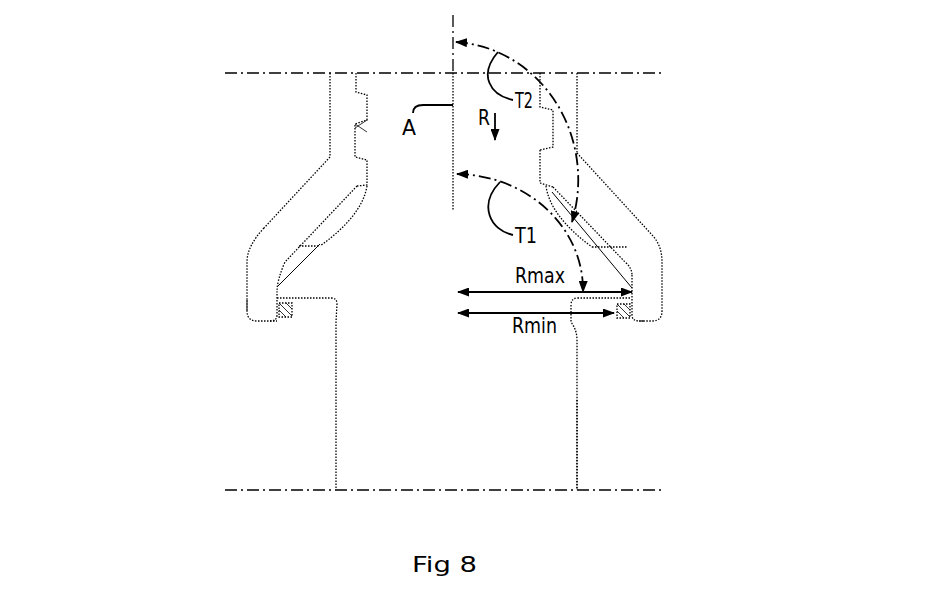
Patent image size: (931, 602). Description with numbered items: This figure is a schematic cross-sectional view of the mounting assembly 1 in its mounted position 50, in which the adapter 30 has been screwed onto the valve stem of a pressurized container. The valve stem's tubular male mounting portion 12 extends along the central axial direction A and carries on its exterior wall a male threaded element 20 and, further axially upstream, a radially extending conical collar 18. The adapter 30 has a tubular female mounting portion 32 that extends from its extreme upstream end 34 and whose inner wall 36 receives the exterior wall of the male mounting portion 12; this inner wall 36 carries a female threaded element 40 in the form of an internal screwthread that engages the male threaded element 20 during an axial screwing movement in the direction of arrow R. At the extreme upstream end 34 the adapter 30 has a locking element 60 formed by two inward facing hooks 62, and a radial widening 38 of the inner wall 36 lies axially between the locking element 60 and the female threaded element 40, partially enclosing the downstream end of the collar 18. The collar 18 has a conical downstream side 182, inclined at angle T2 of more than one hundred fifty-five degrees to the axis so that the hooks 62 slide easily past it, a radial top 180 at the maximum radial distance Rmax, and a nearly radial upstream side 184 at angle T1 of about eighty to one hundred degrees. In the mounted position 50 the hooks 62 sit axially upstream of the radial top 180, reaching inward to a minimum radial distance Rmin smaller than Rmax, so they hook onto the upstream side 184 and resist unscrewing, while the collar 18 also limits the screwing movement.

The mounting assembly 1 is at (738, 212).
The male mounting portion 12 is at (610, 378).
The radial collar 18 is at (602, 257).
The male threaded element 20 is at (548, 128).
The adapter 30 is at (246, 168).
The female mounting portion 32 is at (300, 132).
The extreme upstream end 34 is at (466, 340).
The inner wall 36 is at (541, 152).
The radial widening 38 is at (262, 255).
The female threaded element 40 is at (557, 98).
The mounted position 50 is at (228, 313).
The locking element 60 is at (272, 327).
The inward facing hooks 62 is at (285, 318).
The radial top 180 is at (632, 292).
The downstream side 182 is at (322, 248).
The upstream side 184 is at (322, 303).